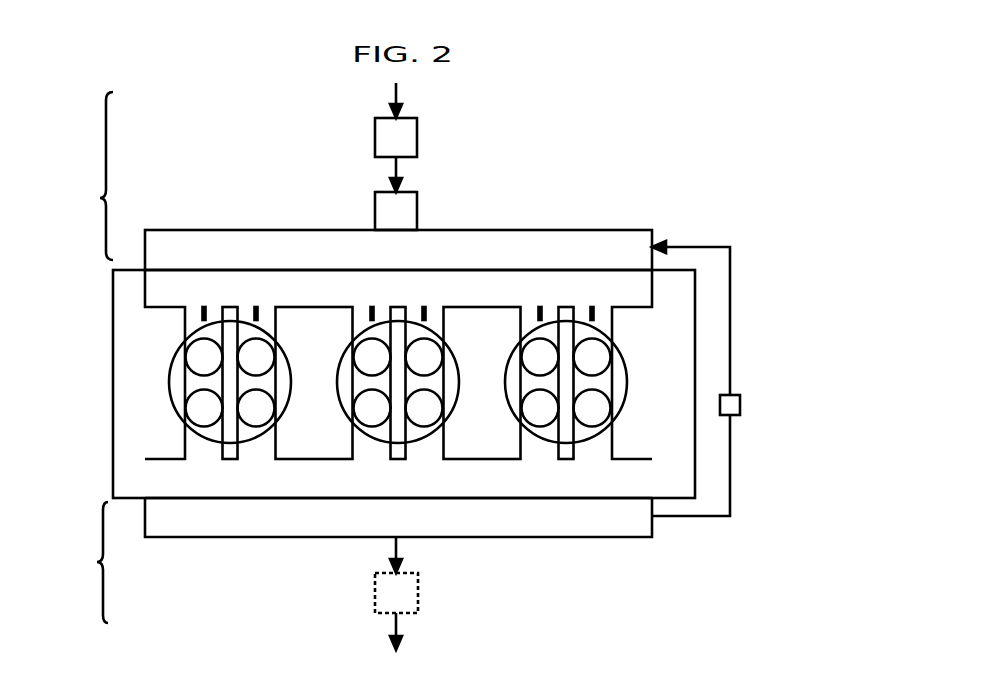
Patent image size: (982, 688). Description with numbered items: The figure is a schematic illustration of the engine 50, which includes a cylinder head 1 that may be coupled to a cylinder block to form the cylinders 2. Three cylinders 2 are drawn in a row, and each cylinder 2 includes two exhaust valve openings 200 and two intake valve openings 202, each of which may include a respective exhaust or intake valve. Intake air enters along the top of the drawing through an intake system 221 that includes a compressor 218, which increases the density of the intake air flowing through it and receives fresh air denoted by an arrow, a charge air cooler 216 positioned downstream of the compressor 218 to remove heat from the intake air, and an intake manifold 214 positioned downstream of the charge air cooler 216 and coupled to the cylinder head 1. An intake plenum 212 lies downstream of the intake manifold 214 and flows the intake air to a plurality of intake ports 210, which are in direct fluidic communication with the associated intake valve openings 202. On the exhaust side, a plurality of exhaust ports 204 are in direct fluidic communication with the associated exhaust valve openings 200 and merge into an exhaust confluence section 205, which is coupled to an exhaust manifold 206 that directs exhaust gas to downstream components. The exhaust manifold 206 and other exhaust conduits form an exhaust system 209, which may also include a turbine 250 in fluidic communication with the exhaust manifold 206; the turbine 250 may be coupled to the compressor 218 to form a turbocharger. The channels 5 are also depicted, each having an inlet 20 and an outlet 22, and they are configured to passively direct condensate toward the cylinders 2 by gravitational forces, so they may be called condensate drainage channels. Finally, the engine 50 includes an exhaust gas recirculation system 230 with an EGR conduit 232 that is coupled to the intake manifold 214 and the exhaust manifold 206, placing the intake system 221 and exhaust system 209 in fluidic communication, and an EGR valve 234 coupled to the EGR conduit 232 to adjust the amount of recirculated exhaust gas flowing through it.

The engine 50 is at (790, 108).
The cylinder head 1 is at (112, 307).
The cylinders 2 is at (169, 388).
The channels 5 is at (200, 315).
The inlet 20 is at (203, 307).
The outlet 22 is at (200, 328).
The exhaust valve openings 200 is at (185, 408).
The intake valve openings 202 is at (185, 357).
The exhaust ports 204 is at (183, 450).
The exhaust confluence section 205 is at (408, 488).
The exhaust manifold 206 is at (146, 533).
The exhaust system 209 is at (85, 562).
The intake ports 210 is at (178, 317).
The intake plenum 212 is at (448, 295).
The intake manifold 214 is at (197, 230).
The charge air cooler 216 is at (375, 212).
The compressor 218 is at (375, 138).
The intake system 221 is at (88, 176).
The exhaust gas recirculation (EGR) system 230 is at (797, 390).
The EGR conduit 232 is at (731, 320).
The EGR valve 234 is at (740, 405).
The turbine 250 is at (418, 591).